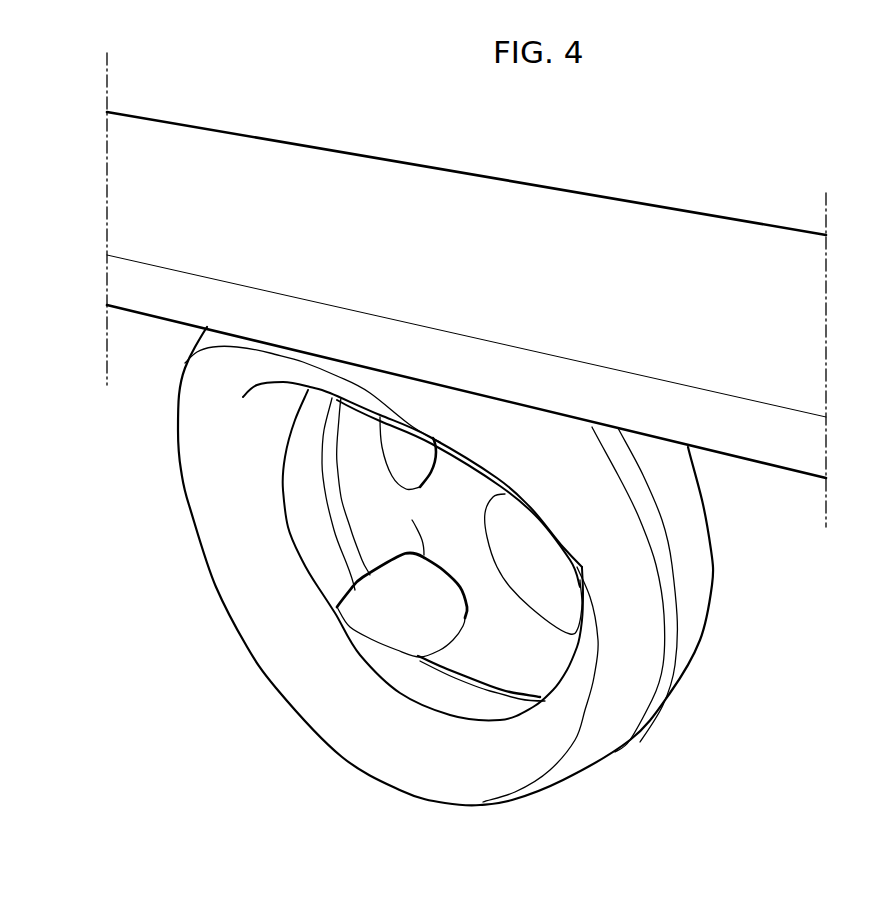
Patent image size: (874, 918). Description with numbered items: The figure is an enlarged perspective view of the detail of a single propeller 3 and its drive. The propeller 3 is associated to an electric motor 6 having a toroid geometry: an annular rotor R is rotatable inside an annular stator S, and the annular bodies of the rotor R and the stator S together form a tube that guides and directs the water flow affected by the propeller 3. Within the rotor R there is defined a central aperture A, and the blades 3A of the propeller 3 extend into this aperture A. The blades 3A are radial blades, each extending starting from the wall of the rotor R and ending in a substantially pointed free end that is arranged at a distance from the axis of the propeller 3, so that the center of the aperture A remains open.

The electric motor 6 is at (215, 593).
The annular rotor R is at (304, 452).
The propeller 3 is at (465, 646).
The blades 3A is at (483, 527).
The central aperture A is at (537, 650).
The annular stator S is at (690, 590).